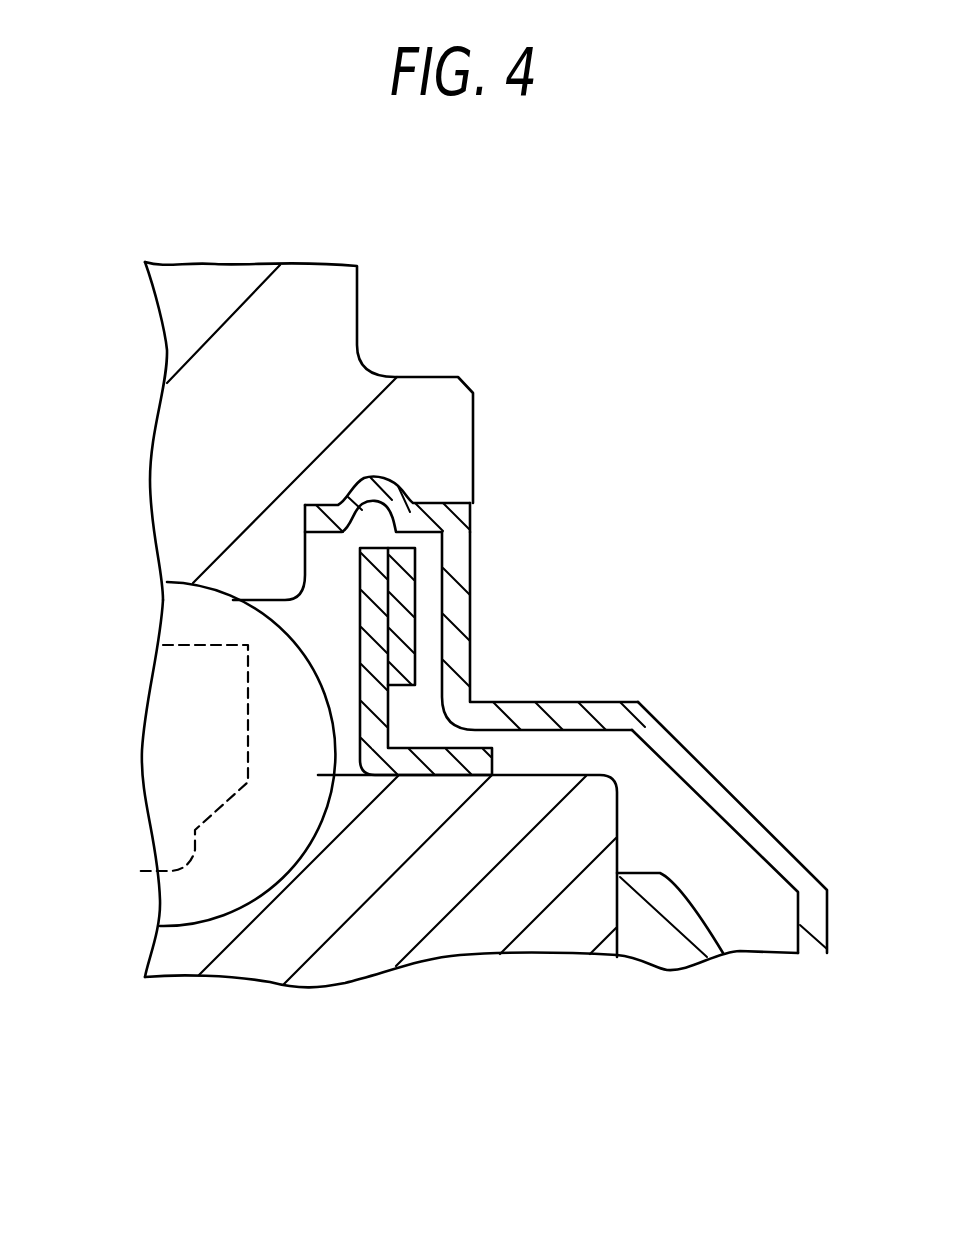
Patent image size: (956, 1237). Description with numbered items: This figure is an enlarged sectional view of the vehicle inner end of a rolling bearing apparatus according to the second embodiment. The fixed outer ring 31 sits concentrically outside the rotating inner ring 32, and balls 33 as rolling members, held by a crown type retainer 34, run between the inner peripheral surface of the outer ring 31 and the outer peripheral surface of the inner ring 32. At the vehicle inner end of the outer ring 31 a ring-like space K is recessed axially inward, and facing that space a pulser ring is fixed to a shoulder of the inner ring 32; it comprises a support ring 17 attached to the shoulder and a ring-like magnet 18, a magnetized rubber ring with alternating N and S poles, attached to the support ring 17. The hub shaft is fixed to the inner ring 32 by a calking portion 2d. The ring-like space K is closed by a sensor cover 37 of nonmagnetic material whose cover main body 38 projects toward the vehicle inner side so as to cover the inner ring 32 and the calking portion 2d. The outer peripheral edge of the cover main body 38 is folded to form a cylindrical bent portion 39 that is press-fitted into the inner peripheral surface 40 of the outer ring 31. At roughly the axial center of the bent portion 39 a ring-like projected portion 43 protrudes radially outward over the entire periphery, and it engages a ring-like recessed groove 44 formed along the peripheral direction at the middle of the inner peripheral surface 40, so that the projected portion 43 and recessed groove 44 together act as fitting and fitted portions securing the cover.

The outer ring 31 is at (347, 312).
The inner ring 32 is at (325, 977).
The balls 33 is at (175, 620).
The crown type retainer 34 is at (140, 872).
The sensor cover 37 is at (728, 779).
The cover main body 38 is at (768, 835).
The folded to bend portion 39 is at (335, 533).
The inner peripheral surface 40 is at (477, 513).
The projected portion 43 is at (372, 478).
The recessed groove 44 is at (415, 501).
The support ring 17 is at (397, 777).
The ring-like magnet 18 is at (412, 685).
The calking portion 2d is at (693, 932).
The ring-like space K is at (330, 720).